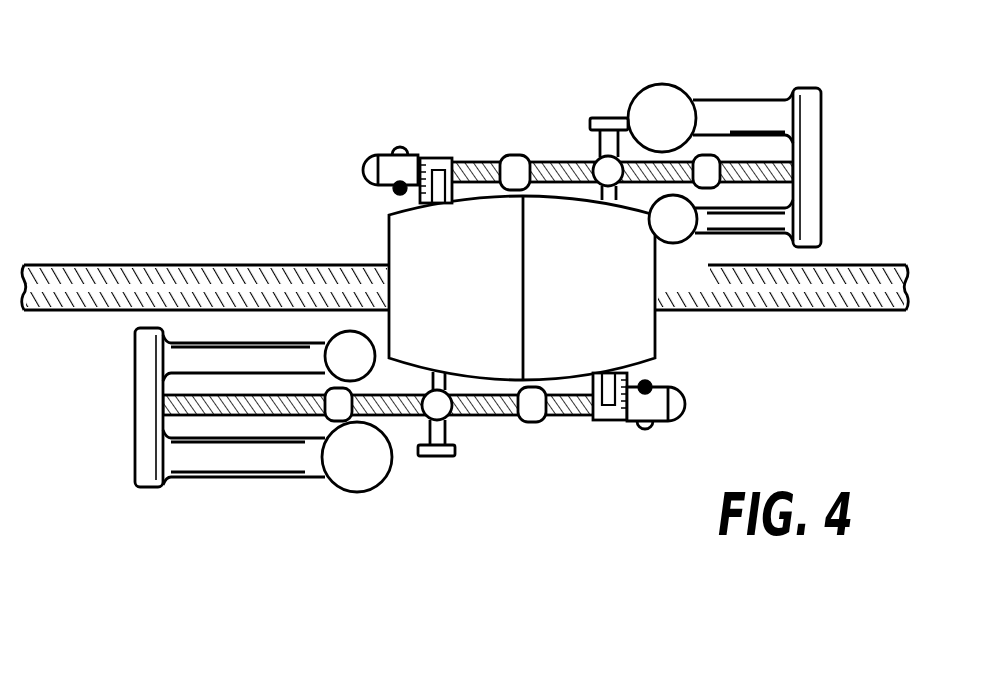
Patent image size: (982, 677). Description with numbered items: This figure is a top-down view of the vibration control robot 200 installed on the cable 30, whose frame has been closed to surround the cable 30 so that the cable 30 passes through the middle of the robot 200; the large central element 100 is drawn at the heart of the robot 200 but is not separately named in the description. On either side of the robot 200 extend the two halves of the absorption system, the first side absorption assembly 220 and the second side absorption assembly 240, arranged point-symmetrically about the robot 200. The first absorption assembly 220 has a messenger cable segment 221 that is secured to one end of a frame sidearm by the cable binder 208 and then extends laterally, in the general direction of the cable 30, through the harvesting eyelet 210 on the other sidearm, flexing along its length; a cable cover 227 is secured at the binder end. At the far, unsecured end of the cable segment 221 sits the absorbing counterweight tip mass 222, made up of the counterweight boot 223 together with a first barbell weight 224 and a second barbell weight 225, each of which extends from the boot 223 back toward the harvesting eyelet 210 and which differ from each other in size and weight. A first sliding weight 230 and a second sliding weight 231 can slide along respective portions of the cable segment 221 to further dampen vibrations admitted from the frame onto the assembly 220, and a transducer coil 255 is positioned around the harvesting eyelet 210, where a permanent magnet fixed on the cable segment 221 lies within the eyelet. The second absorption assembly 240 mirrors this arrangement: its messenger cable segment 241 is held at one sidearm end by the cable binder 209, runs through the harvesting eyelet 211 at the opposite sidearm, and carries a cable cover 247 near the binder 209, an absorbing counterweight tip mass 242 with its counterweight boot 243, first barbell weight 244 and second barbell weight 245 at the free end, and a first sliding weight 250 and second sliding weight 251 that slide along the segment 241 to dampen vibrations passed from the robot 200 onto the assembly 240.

The vibration control robot 200 is at (148, 70).
The cable 30 is at (116, 272).
The device body 100 is at (393, 238).
The second side absorption assembly 240 is at (527, 80).
The messenger cable segment 241 is at (560, 164).
The absorbing counterweight tip mass 242 is at (742, 76).
The counterweight boot 243 is at (808, 96).
The first barbell weight 244 is at (660, 100).
The second barbell weight 245 is at (681, 240).
The cable cover 247 is at (388, 158).
The first sliding weight 250 is at (517, 162).
The second sliding weight 251 is at (705, 158).
The cable binder 209 is at (437, 160).
The harvesting eyelet 211 is at (604, 128).
The first side absorption assembly 220 is at (449, 538).
The messenger cable segment 221 is at (480, 416).
The absorbing counterweight tip mass 222 is at (245, 494).
The counterweight boot 223 is at (150, 488).
The first barbell weight 224 is at (360, 485).
The second barbell weight 225 is at (345, 346).
The cable cover 227 is at (677, 402).
The first sliding weight 230 is at (531, 420).
The second sliding weight 231 is at (338, 415).
The cable binder 208 is at (610, 418).
The harvesting eyelet 210 is at (448, 457).
The transducer coil 255 is at (425, 456).